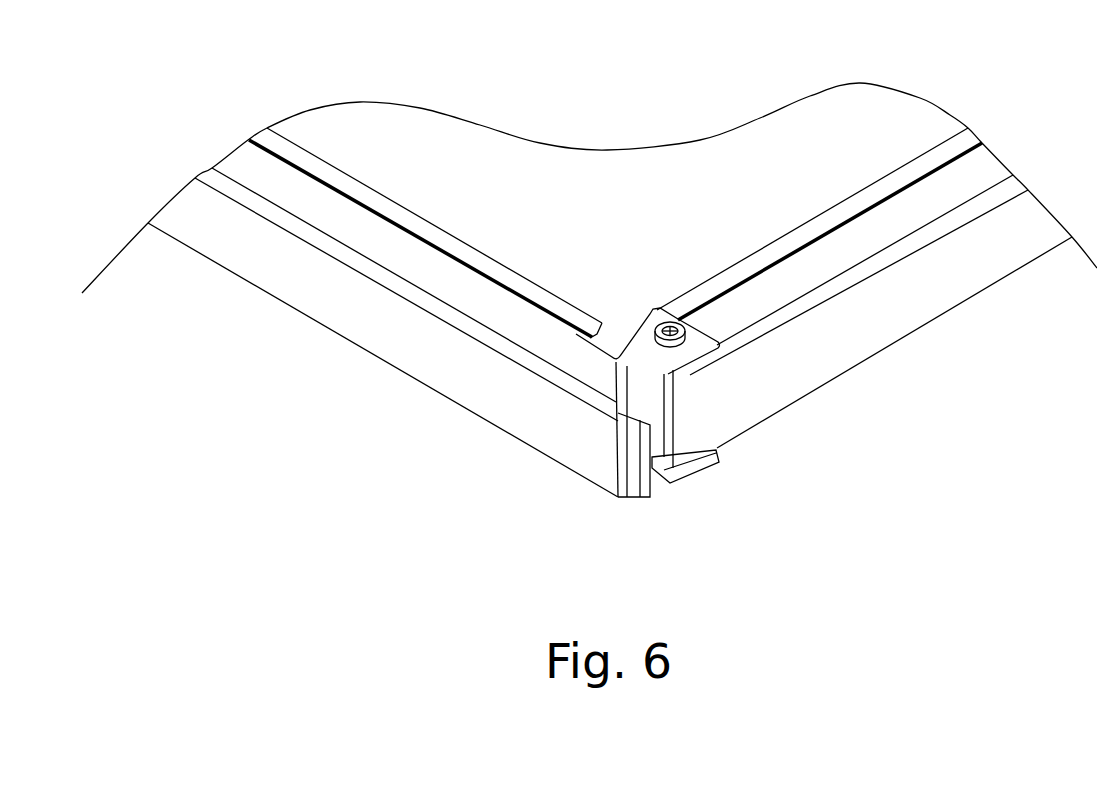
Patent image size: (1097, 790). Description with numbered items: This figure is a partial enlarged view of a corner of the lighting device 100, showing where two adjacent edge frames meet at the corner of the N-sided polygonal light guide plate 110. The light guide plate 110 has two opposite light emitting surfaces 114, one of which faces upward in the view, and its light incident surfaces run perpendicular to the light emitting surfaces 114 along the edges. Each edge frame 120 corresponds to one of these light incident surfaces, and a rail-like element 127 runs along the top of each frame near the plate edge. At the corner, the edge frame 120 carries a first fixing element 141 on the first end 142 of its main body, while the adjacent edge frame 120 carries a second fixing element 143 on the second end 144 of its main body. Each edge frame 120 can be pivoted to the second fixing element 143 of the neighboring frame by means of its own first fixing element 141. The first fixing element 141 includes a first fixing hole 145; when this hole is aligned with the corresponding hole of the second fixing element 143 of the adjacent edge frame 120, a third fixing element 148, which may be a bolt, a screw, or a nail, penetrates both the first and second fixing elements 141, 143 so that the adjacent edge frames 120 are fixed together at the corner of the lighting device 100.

The lighting device 100 is at (164, 58).
The N-sided polygonal light guide plate 110 is at (505, 152).
The light emitting surface 114 is at (708, 160).
The edge frame 120 is at (303, 294).
The rail 127 is at (512, 288).
The first fixing element 141 is at (712, 355).
The first end 142 is at (613, 387).
The second fixing element 143 is at (713, 366).
The second end 144 is at (693, 411).
The first fixing hole 145 is at (659, 362).
The third fixing element 148 is at (694, 323).